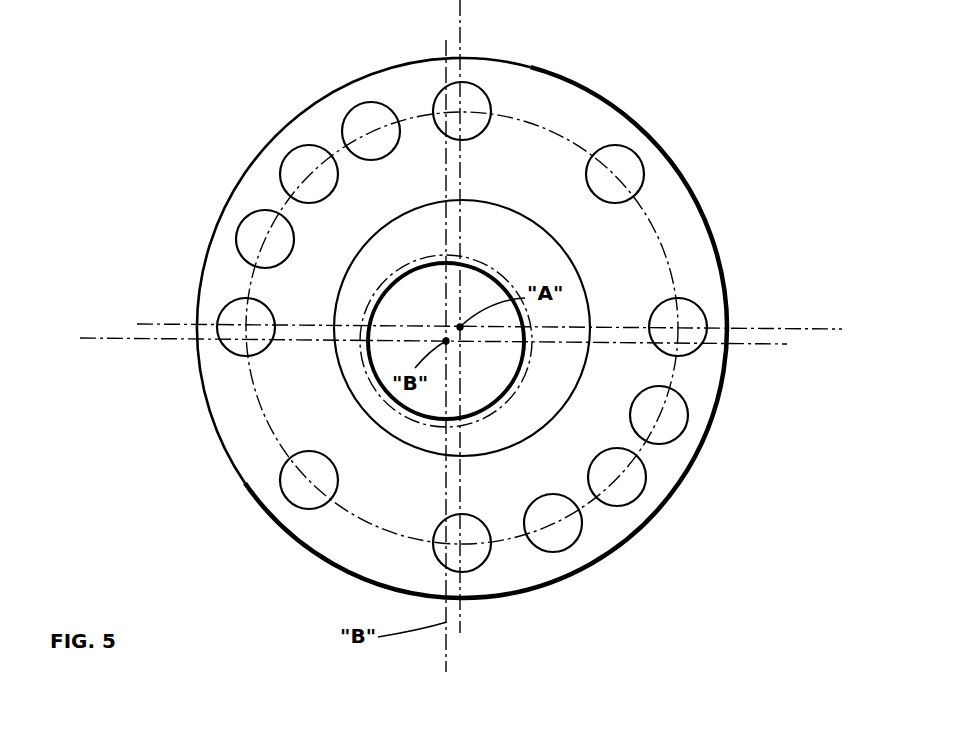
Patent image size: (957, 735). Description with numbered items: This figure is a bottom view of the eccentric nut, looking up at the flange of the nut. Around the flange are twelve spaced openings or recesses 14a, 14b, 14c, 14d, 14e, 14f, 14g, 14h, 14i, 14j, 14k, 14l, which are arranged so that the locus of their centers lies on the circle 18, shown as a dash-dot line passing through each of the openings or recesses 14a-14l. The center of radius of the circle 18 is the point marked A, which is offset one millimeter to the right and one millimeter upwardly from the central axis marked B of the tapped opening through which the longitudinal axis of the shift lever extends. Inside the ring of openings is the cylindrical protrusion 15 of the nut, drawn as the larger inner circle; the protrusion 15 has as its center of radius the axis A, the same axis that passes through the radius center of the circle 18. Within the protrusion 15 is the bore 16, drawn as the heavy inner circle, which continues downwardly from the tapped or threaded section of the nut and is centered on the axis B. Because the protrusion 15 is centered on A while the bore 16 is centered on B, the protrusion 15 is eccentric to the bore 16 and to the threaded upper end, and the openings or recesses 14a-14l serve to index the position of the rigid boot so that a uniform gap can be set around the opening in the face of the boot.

The opening or recess 14a is at (222, 313).
The opening or recess 14b is at (248, 216).
The opening or recess 14c is at (290, 152).
The opening or recess 14d is at (361, 104).
The opening or recess 14e is at (472, 84).
The opening or recess 14f is at (637, 155).
The opening or recess 14g is at (697, 305).
The opening or recess 14h is at (676, 439).
The opening or recess 14i is at (631, 502).
The opening or recess 14j is at (565, 549).
The opening or recess 14k is at (472, 570).
The opening or recess 14l is at (283, 492).
The cylindrical protrusion 15 is at (485, 202).
The bore 16 is at (378, 362).
The circle 18 is at (553, 132).